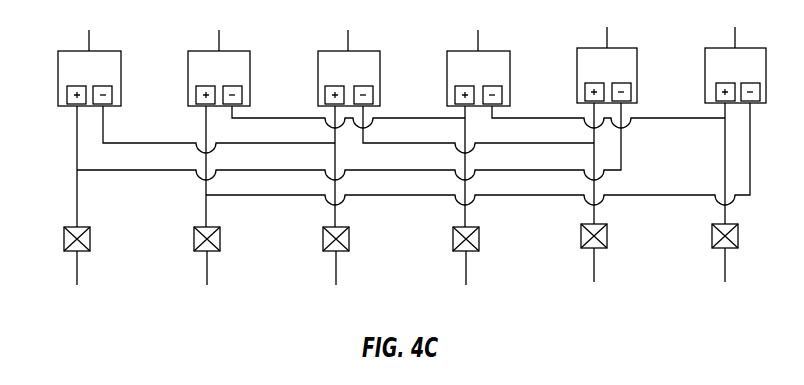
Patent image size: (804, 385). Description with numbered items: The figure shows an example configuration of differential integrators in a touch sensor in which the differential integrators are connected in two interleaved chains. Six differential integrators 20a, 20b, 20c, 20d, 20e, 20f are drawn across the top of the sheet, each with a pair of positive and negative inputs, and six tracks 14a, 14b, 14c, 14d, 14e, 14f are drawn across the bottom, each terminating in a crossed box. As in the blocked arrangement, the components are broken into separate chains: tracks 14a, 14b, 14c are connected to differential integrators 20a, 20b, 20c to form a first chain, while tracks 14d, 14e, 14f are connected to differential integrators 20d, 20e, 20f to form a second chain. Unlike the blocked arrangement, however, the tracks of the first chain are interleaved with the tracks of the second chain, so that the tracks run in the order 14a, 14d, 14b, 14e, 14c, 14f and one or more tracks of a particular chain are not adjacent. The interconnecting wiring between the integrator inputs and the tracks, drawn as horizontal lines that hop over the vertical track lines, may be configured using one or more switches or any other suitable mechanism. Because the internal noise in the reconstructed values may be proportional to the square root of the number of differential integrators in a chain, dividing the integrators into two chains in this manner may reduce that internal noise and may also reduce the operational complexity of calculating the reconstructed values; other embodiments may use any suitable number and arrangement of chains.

The differential integrator 20a is at (57, 77).
The differential integrator 20b is at (187, 77).
The differential integrator 20c is at (317, 77).
The differential integrator 20d is at (446, 77).
The differential integrator 20e is at (576, 74).
The differential integrator 20f is at (704, 74).
The track 14a is at (73, 267).
The track 14b is at (332, 267).
The track 14c is at (590, 264).
The track 14d is at (203, 267).
The track 14e is at (462, 267).
The track 14f is at (720, 264).